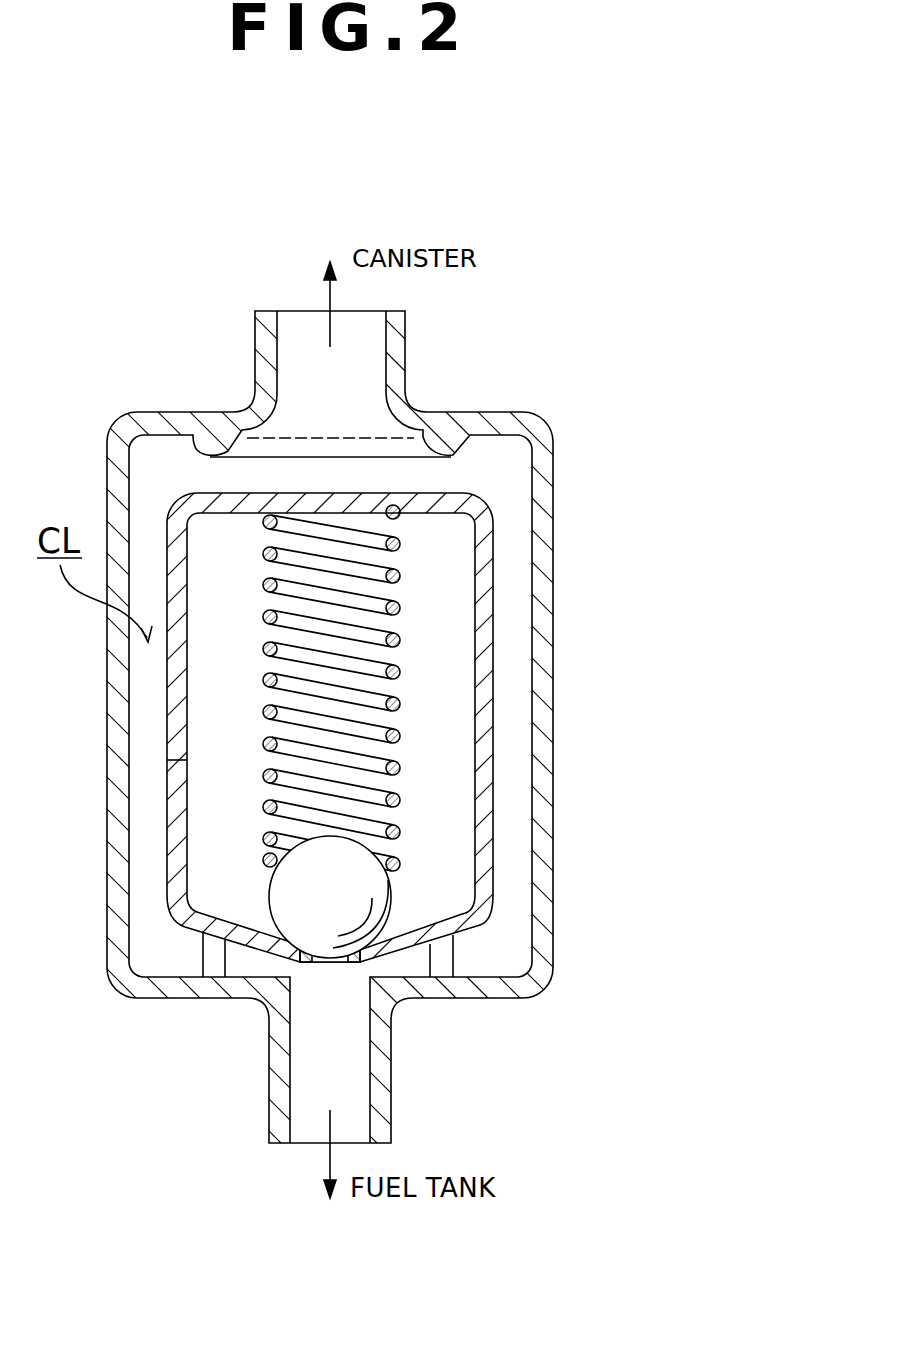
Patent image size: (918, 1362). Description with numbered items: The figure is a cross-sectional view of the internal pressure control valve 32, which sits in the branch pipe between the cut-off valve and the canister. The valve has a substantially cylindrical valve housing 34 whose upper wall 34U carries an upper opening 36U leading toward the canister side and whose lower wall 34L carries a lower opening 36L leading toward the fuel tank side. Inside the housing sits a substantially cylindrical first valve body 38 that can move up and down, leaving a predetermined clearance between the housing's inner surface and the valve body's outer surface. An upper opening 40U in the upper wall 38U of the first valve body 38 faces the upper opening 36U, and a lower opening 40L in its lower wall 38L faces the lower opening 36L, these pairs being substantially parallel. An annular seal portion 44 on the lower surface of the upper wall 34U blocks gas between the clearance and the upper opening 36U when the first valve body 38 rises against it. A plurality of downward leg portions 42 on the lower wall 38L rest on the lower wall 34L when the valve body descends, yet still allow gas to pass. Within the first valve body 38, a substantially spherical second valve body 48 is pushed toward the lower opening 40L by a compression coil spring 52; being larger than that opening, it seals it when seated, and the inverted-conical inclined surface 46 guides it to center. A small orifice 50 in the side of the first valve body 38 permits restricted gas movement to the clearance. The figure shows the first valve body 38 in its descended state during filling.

The internal pressure control valve 32 is at (555, 308).
The valve housing 34 is at (547, 643).
The upper wall 34U is at (497, 418).
The lower wall 34L is at (493, 1000).
The upper opening 36U is at (283, 330).
The lower opening 36L is at (292, 1137).
The first valve body 38 is at (492, 758).
The upper wall 38U is at (488, 500).
The lower wall 38L is at (427, 945).
The upper opening 40U is at (368, 496).
The lower opening 40L is at (310, 963).
The leg portions 42 is at (214, 963).
The seal portion 44 is at (205, 443).
The inclined surface 46 is at (253, 937).
The second valve body 48 is at (380, 887).
The orifice 50 is at (187, 765).
The compression coil spring 52 is at (399, 632).